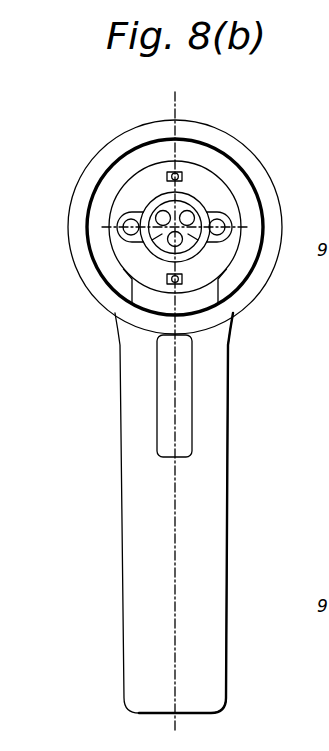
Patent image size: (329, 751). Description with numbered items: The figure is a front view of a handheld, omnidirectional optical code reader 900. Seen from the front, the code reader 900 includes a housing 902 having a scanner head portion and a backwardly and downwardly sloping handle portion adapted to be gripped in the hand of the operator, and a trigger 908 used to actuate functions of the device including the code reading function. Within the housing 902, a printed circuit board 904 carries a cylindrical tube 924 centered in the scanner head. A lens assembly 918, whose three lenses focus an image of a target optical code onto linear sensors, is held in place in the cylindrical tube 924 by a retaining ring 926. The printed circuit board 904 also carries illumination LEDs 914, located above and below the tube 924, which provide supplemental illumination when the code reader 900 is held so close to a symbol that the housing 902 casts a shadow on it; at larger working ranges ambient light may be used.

The code reader 900 is at (98, 137).
The housing 902 is at (77, 265).
The printed circuit board 904 is at (123, 270).
The trigger 908 is at (168, 412).
The illumination LEDs 914 is at (172, 170).
The lens assembly 918 is at (227, 217).
The cylindrical tube 924 is at (198, 200).
The retaining ring 926 is at (181, 200).